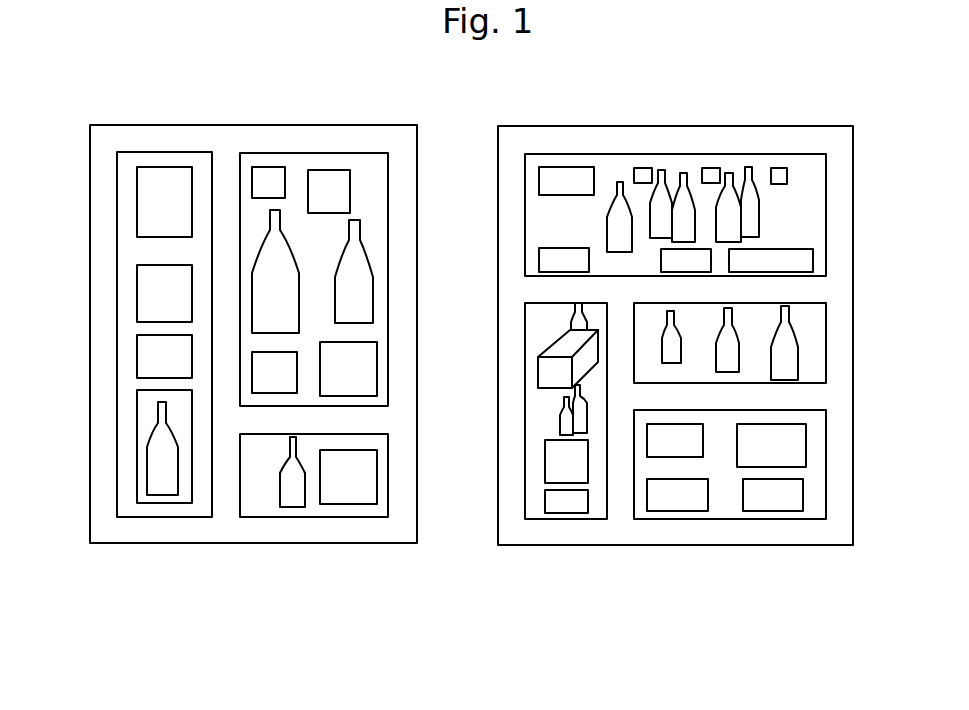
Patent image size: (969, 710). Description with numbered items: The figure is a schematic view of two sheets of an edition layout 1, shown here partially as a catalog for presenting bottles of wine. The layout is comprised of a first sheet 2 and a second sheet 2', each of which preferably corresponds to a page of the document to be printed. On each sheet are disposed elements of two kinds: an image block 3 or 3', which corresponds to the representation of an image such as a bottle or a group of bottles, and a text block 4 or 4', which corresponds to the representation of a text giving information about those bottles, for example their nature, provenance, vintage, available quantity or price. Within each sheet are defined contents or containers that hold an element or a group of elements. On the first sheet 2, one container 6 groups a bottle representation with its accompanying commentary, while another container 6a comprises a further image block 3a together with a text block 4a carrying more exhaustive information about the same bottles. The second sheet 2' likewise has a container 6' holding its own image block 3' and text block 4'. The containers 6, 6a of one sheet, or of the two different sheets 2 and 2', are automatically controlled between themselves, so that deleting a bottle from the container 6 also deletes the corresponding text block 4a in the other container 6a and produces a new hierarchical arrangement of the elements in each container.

The edition layout 1 is at (811, 572).
The sheet 2 is at (253, 360).
The sheet 2' is at (675, 367).
The image block 3 is at (171, 271).
The image block 3a is at (158, 477).
The image block 3' is at (829, 343).
The text block 4 is at (196, 169).
The text block 4a is at (143, 370).
The text block 4' is at (808, 247).
The container 6 is at (348, 243).
The container 6a is at (116, 500).
The container 6' is at (712, 199).